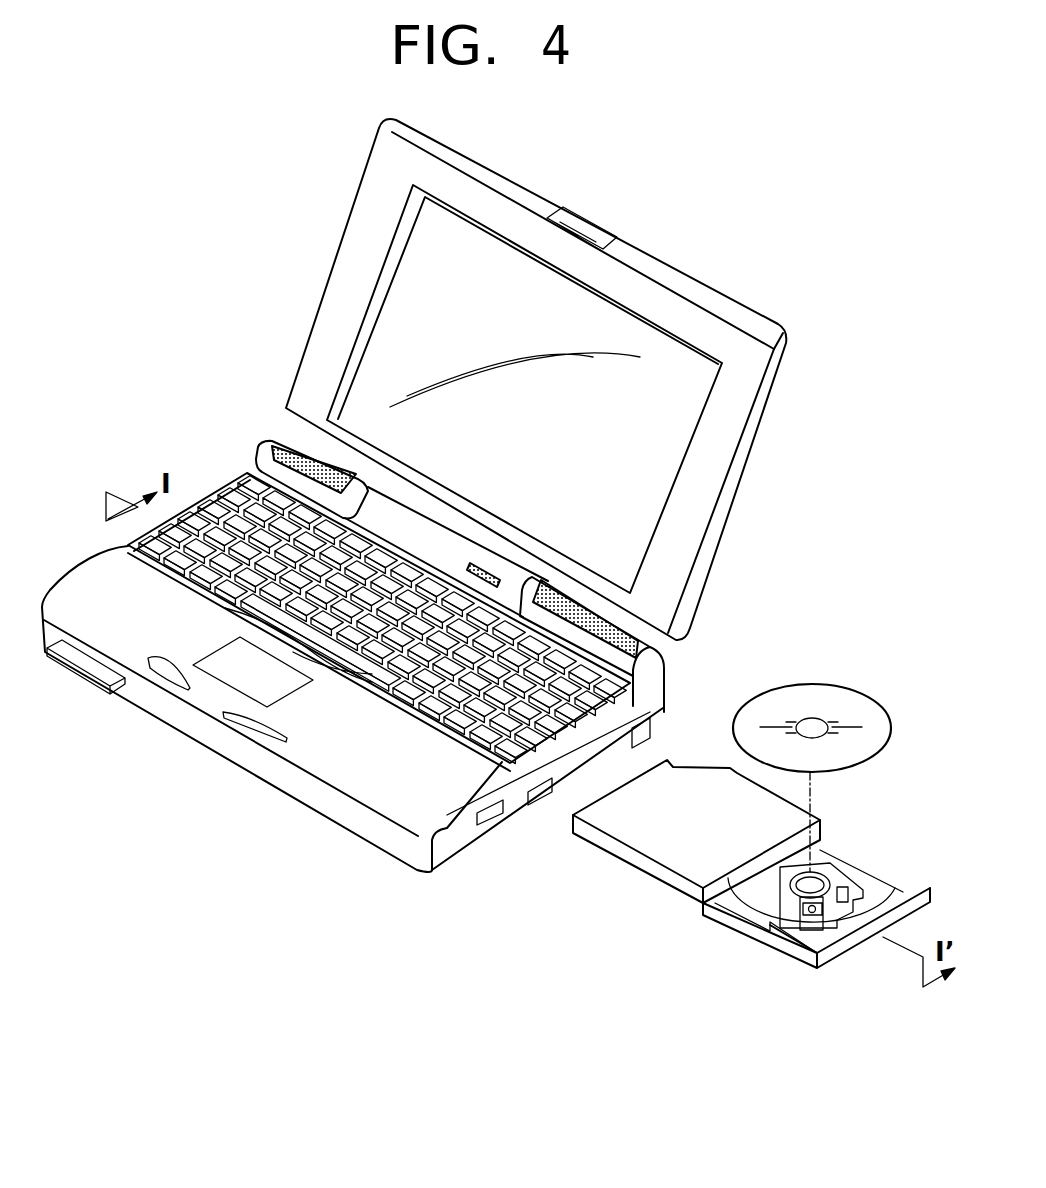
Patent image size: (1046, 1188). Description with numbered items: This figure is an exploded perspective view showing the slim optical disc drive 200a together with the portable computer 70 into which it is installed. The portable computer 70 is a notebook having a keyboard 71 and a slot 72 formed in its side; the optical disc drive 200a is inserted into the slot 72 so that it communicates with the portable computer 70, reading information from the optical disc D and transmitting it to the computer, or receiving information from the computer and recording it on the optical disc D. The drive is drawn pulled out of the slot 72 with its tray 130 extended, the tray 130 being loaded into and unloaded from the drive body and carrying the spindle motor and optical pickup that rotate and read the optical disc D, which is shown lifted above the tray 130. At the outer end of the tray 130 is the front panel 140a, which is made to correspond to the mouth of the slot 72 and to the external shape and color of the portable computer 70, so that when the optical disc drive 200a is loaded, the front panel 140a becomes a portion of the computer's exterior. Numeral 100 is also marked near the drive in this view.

The portable computer 70 is at (414, 516).
The keyboard 71 is at (247, 528).
The slot 72 is at (550, 786).
The optical disk drive 100 is at (715, 894).
The slim optical disc drive 200a is at (617, 867).
The tray 130 is at (755, 938).
The front panel 140a is at (835, 957).
The optical disc D is at (853, 706).